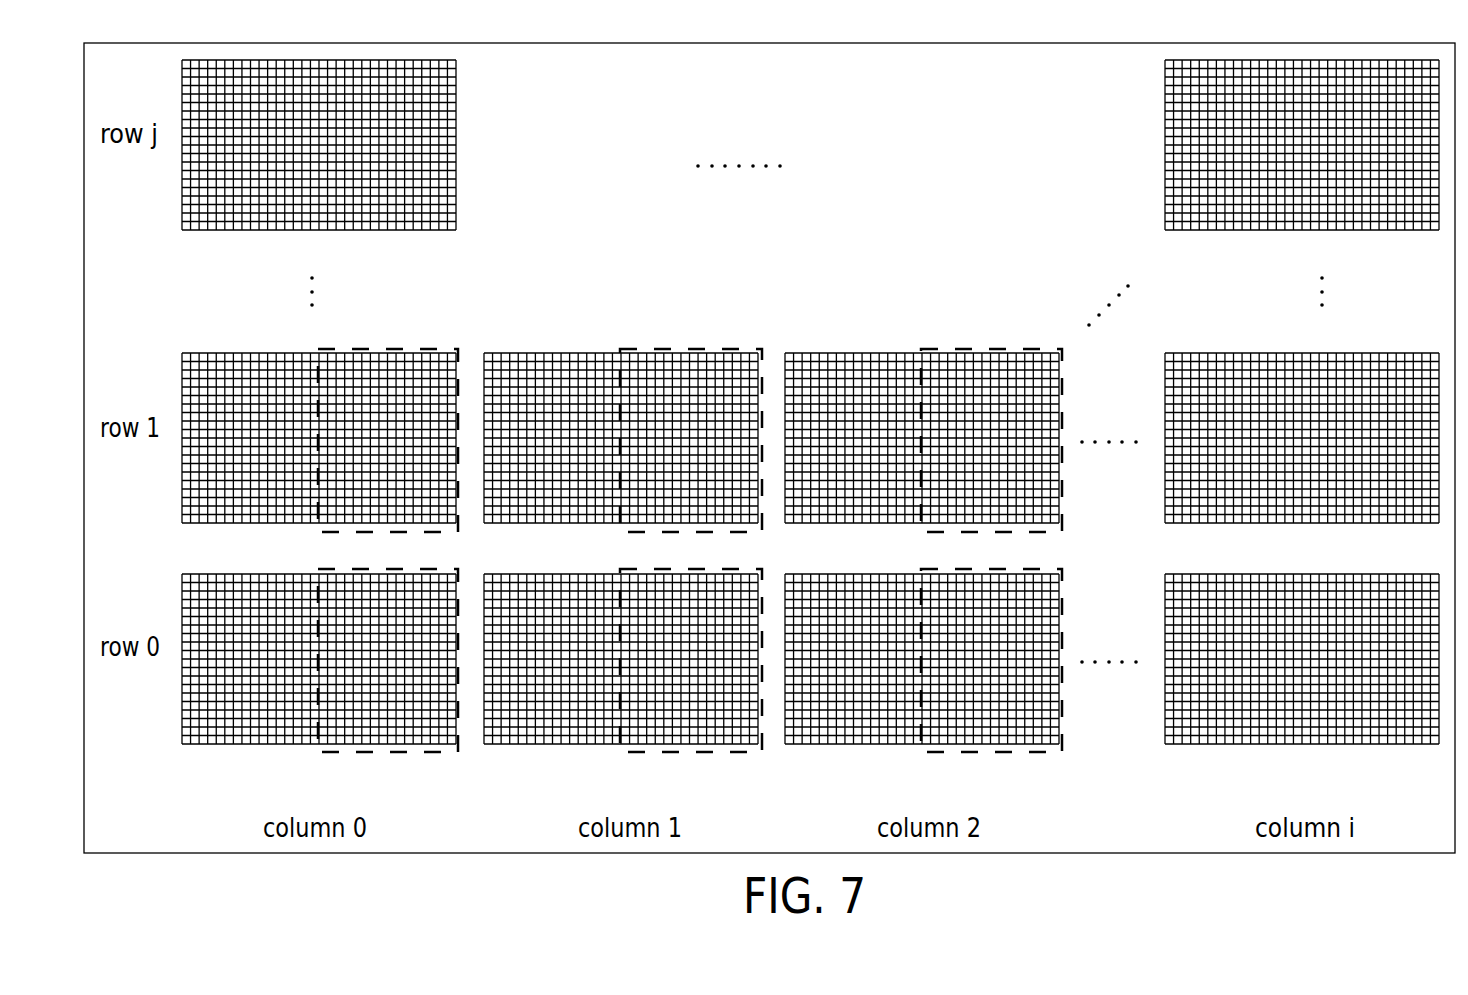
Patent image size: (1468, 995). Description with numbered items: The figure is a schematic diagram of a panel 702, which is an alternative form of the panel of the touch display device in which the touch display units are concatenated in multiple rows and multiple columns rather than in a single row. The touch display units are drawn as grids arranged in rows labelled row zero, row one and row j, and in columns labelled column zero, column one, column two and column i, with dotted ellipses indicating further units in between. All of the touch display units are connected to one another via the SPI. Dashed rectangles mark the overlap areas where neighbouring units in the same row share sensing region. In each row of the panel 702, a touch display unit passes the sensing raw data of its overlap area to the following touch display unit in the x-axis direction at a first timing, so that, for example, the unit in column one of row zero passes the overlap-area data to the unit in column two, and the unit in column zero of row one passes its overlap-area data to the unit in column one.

The panel 702 is at (1380, 43).